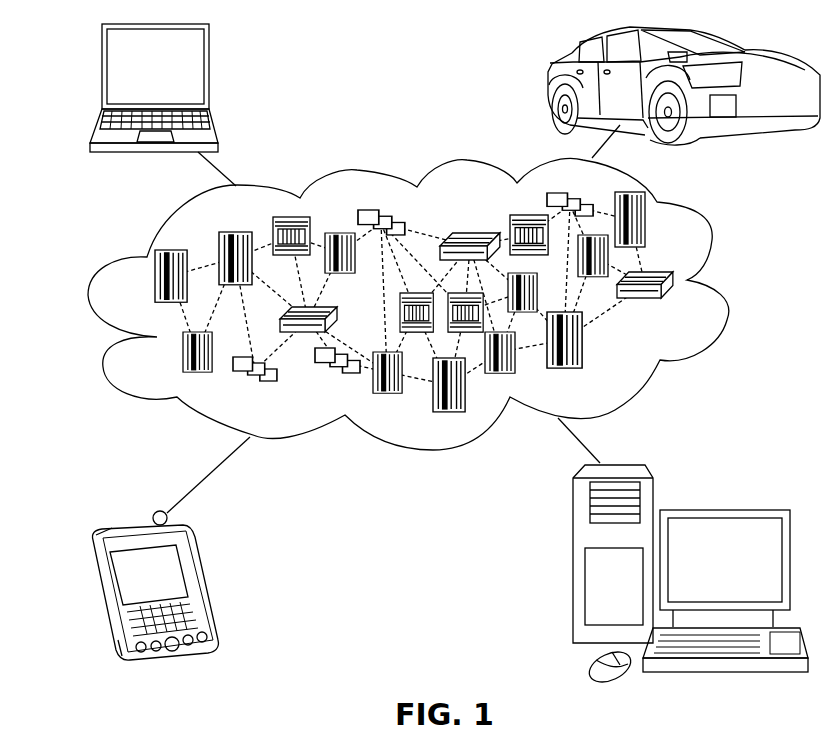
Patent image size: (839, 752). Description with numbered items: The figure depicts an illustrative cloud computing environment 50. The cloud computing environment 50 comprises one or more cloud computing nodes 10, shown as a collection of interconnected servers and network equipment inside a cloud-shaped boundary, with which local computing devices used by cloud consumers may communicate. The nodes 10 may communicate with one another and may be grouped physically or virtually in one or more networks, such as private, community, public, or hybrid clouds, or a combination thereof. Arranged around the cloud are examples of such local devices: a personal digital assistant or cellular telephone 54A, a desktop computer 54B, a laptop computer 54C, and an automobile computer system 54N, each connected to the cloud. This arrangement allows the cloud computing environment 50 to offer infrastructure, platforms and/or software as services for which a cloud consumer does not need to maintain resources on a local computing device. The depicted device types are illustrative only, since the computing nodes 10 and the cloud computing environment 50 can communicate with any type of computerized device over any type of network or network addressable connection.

The cloud computing nodes 10 is at (680, 308).
The cloud computing environment 50 is at (718, 280).
The personal digital assistant (PDA) or cellular telephone 54A is at (203, 585).
The desktop computer 54B is at (724, 510).
The laptop computer 54C is at (211, 68).
The automobile computer system 54N is at (549, 82).